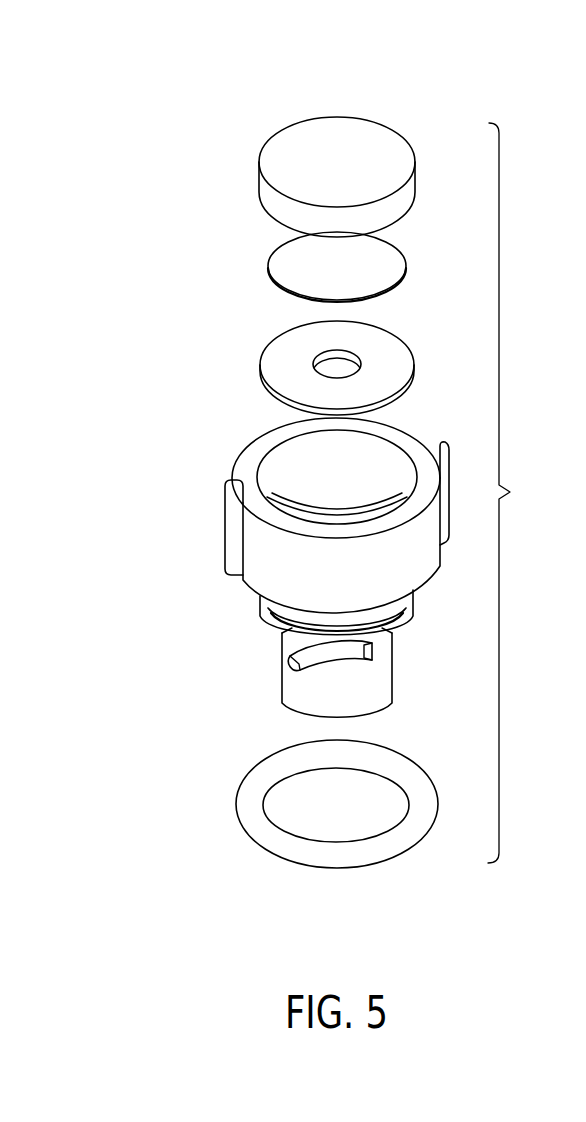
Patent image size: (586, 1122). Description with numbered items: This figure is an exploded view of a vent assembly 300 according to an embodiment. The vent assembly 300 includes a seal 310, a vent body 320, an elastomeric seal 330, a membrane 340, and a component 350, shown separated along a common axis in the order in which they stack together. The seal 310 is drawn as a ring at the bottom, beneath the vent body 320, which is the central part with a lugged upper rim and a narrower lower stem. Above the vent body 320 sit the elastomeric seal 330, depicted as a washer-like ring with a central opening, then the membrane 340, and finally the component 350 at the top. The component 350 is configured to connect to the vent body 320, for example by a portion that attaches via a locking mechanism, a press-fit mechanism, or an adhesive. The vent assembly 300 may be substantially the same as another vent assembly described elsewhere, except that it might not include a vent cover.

The vent assembly 300 is at (121, 90).
The seal 310 is at (236, 803).
The vent body 320 is at (225, 548).
The elastomeric seal 330 is at (260, 362).
The membrane 340 is at (268, 254).
The component 350 is at (258, 165).